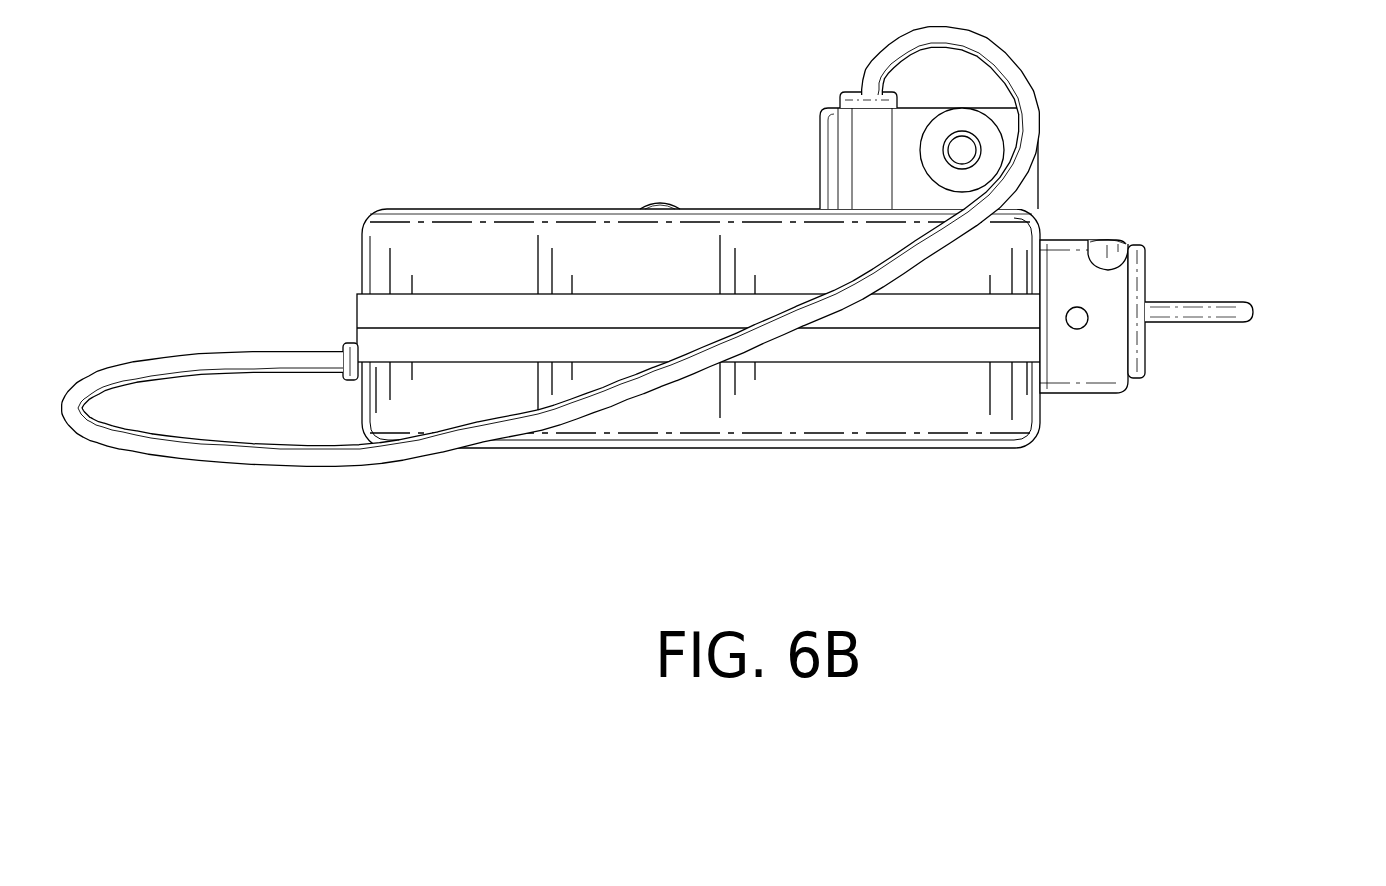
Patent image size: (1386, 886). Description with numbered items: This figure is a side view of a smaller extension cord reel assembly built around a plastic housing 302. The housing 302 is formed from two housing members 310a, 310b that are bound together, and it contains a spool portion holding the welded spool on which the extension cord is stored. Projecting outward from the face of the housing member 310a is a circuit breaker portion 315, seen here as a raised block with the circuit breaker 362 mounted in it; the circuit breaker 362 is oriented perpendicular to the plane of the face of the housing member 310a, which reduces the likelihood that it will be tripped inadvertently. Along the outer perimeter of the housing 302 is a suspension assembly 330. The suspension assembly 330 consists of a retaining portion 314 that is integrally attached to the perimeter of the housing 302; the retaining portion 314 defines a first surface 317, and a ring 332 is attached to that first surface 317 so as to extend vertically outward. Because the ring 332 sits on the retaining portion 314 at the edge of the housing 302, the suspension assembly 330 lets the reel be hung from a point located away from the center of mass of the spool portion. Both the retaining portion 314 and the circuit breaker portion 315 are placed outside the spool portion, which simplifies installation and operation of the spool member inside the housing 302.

The housing 302 is at (1057, 91).
The housing member 310a is at (600, 240).
The housing member 310b is at (940, 425).
The retaining portion 314 is at (1097, 360).
The circuit breaker portion 315 is at (868, 163).
The first surface 317 is at (1143, 268).
The suspension assembly 330 is at (1270, 356).
The ring 332 is at (1220, 312).
The circuit breaker 362 is at (943, 130).